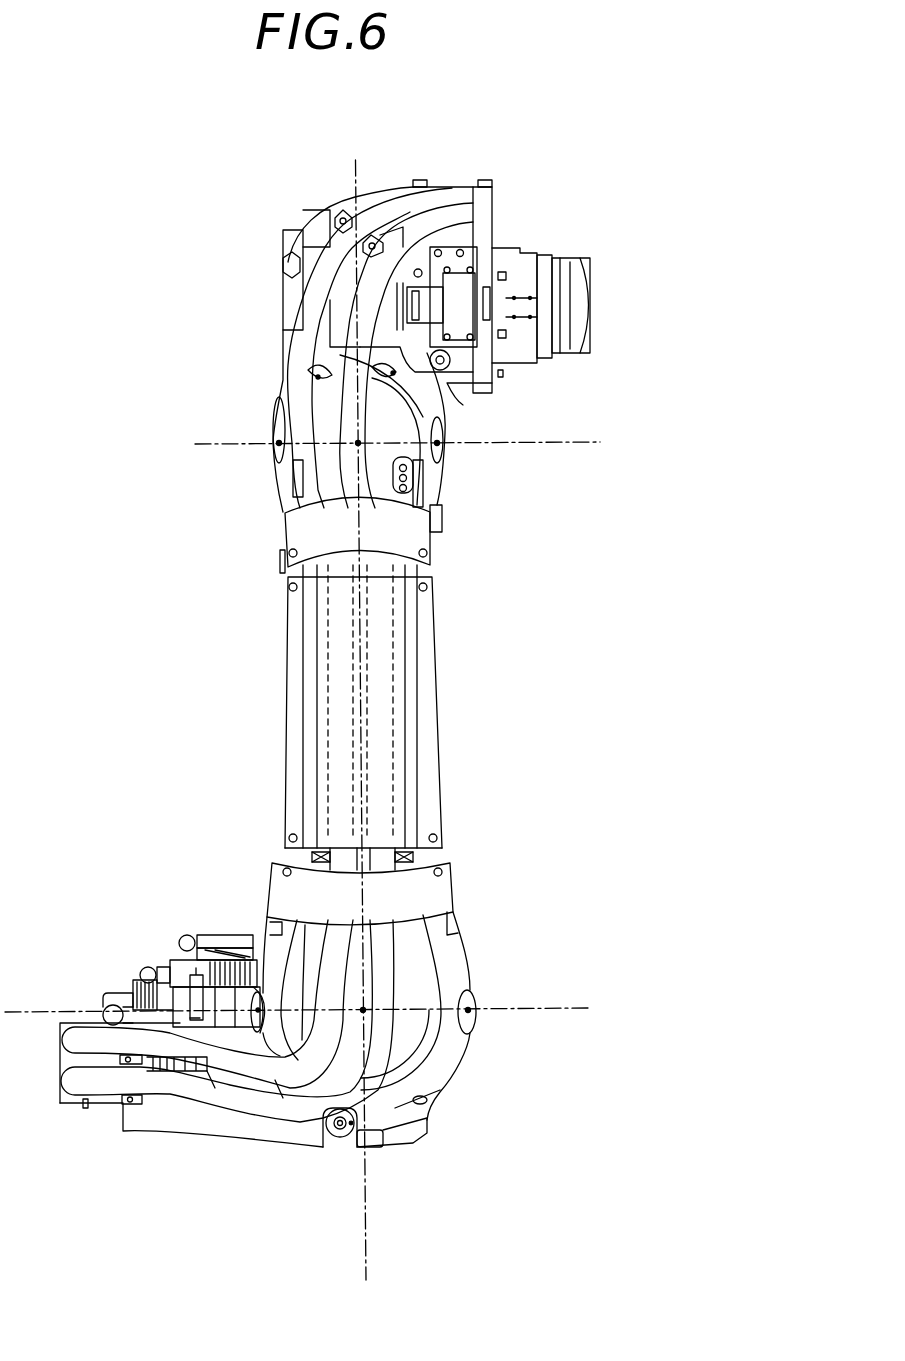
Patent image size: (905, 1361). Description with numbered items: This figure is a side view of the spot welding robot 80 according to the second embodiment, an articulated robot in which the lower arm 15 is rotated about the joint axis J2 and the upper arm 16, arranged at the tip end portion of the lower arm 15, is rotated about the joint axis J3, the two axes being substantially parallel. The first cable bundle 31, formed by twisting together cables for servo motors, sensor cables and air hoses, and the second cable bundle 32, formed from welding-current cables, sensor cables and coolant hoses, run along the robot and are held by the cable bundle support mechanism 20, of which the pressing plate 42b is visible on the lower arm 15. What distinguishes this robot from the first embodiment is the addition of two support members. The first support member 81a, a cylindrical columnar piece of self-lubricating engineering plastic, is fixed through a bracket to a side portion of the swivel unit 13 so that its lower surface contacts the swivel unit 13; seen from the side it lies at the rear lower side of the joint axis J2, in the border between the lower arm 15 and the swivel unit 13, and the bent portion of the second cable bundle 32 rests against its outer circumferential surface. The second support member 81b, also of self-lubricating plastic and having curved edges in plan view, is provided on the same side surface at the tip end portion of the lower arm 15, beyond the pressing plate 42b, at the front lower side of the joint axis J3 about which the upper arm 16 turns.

The spot welding robot 80 is at (172, 222).
The cable bundle support mechanism 20 is at (228, 510).
The upper arm 16 is at (480, 250).
The joint axis J3 is at (358, 443).
The second support member 81b is at (410, 467).
The pressing plate 42b is at (423, 538).
The first cable bundle 31 is at (337, 960).
The lower arm 15 is at (453, 955).
The second cable bundle 32 is at (390, 993).
The joint axis J2 is at (365, 1012).
The swivel unit 13 is at (410, 1128).
The first support member 81a is at (340, 1133).